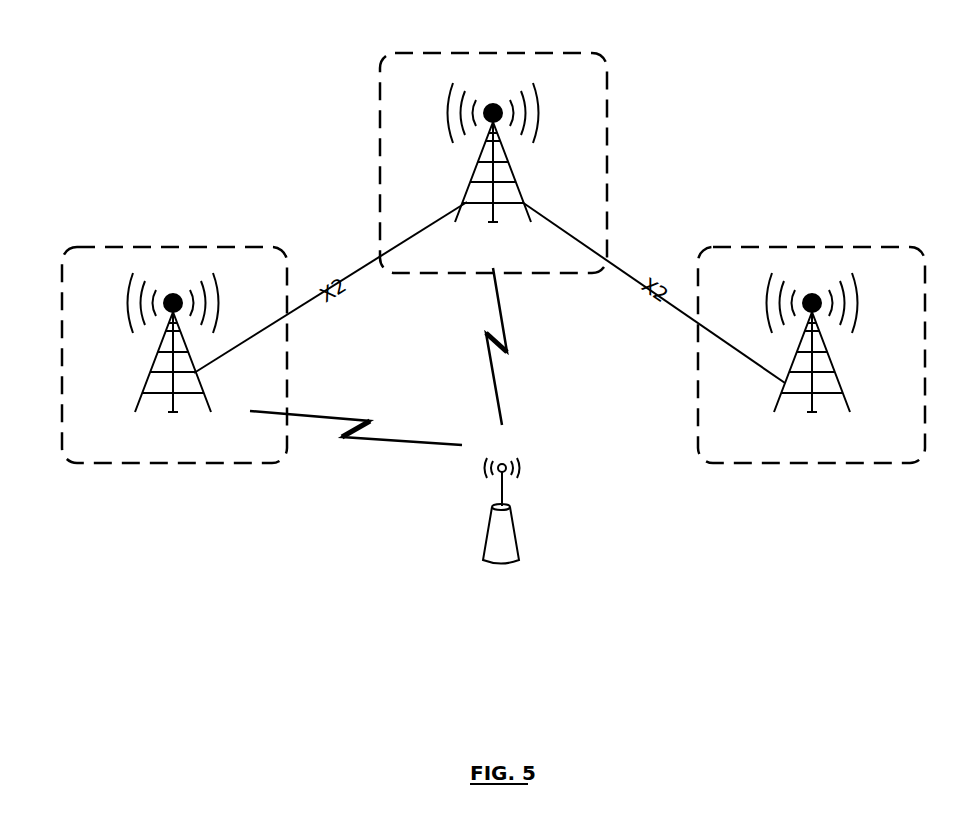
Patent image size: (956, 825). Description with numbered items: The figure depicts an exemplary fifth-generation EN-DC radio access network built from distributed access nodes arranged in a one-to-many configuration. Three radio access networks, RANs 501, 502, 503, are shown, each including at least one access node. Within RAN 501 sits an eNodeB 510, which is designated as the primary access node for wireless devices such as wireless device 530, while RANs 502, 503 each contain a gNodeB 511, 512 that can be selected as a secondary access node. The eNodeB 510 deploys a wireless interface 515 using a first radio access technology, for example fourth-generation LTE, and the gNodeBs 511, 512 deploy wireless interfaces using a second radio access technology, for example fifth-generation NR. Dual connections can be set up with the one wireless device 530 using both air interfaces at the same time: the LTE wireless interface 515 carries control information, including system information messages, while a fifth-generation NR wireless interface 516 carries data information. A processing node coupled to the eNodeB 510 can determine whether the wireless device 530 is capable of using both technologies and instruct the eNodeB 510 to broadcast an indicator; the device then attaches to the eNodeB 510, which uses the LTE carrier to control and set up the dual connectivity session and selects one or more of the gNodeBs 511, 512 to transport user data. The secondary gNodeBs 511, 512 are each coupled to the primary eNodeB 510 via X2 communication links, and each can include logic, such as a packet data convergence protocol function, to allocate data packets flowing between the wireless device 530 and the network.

The RAN 501 is at (421, 52).
The RAN 502 is at (110, 247).
The RAN 503 is at (817, 247).
The eNodeB 510 is at (475, 183).
The gNodeB 511 is at (145, 392).
The gNodeB 512 is at (838, 383).
The wireless interface 515 is at (487, 338).
The 5G wireless interface 516 is at (385, 440).
The wireless device 530 is at (487, 535).